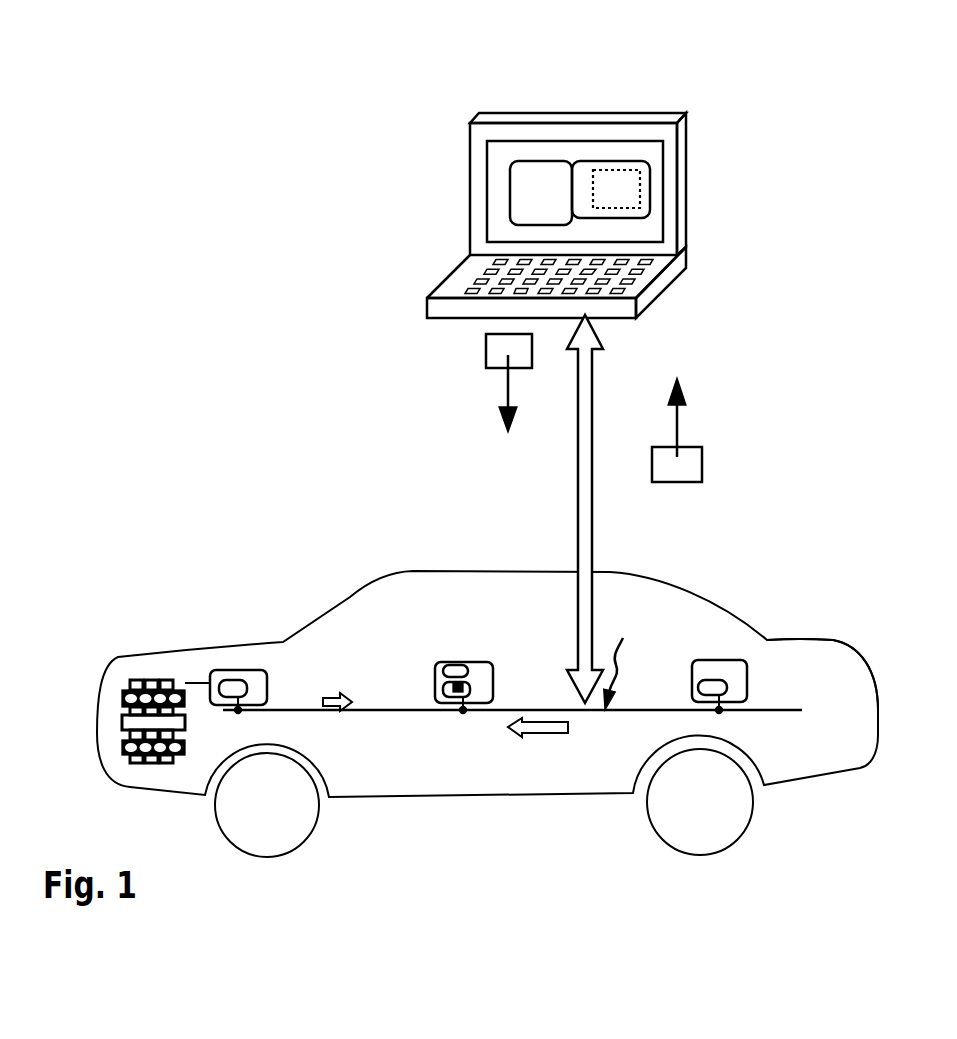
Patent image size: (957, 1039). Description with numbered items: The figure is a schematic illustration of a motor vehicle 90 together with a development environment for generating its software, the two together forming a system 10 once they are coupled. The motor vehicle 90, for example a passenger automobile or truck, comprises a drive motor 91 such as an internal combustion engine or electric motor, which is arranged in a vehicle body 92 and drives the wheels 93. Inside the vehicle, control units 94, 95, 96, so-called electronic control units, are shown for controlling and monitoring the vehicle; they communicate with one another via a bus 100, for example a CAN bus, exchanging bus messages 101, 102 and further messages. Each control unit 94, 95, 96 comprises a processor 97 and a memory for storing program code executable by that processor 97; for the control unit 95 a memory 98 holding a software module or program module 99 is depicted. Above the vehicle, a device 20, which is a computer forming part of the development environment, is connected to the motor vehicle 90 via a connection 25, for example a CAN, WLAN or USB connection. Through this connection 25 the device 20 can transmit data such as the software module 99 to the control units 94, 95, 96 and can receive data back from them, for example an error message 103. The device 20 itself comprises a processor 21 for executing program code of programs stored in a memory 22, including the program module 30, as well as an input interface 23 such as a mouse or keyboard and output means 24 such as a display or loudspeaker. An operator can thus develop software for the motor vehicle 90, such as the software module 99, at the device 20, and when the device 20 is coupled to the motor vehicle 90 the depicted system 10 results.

The system 10 is at (170, 125).
The device 20 is at (708, 104).
The processor 21 is at (520, 202).
The memory 22 is at (640, 214).
The input interface 23 is at (612, 287).
The output means 24 is at (495, 150).
The connection 25 is at (587, 532).
The program module 30 is at (642, 190).
The motor vehicle 90 is at (333, 588).
The drive motor 91 is at (122, 690).
The vehicle body 92 is at (825, 643).
The wheels 93 is at (295, 837).
The control unit 94 is at (260, 678).
The control unit 95 is at (478, 662).
The control unit 96 is at (728, 665).
The processor 97 is at (225, 678).
The memory 98 is at (447, 685).
The software module 99 is at (497, 352).
The bus 100 is at (628, 658).
The bus message 101 is at (337, 695).
The bus message 102 is at (548, 735).
The error message 103 is at (690, 463).